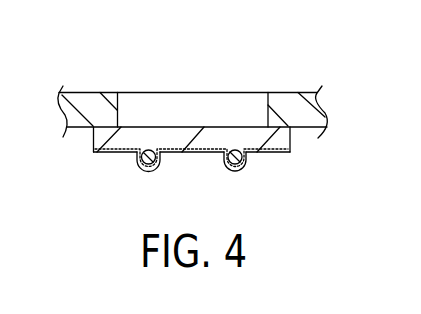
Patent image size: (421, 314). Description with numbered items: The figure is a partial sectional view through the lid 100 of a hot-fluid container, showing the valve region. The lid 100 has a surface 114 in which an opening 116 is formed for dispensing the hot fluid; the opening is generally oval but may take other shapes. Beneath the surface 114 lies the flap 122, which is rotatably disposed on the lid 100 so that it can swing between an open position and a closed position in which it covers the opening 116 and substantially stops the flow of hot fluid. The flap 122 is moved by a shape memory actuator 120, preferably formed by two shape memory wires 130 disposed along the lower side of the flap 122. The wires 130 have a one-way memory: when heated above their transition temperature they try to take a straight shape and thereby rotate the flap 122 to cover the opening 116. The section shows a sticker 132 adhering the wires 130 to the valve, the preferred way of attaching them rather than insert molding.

The lid 100 is at (259, 67).
The surface 114 is at (97, 92).
The opening 116 is at (118, 113).
The flap 122 is at (93, 137).
The shape memory actuator 120 is at (115, 158).
The sticker 132 is at (194, 153).
The shape memory wires 130 is at (233, 150).